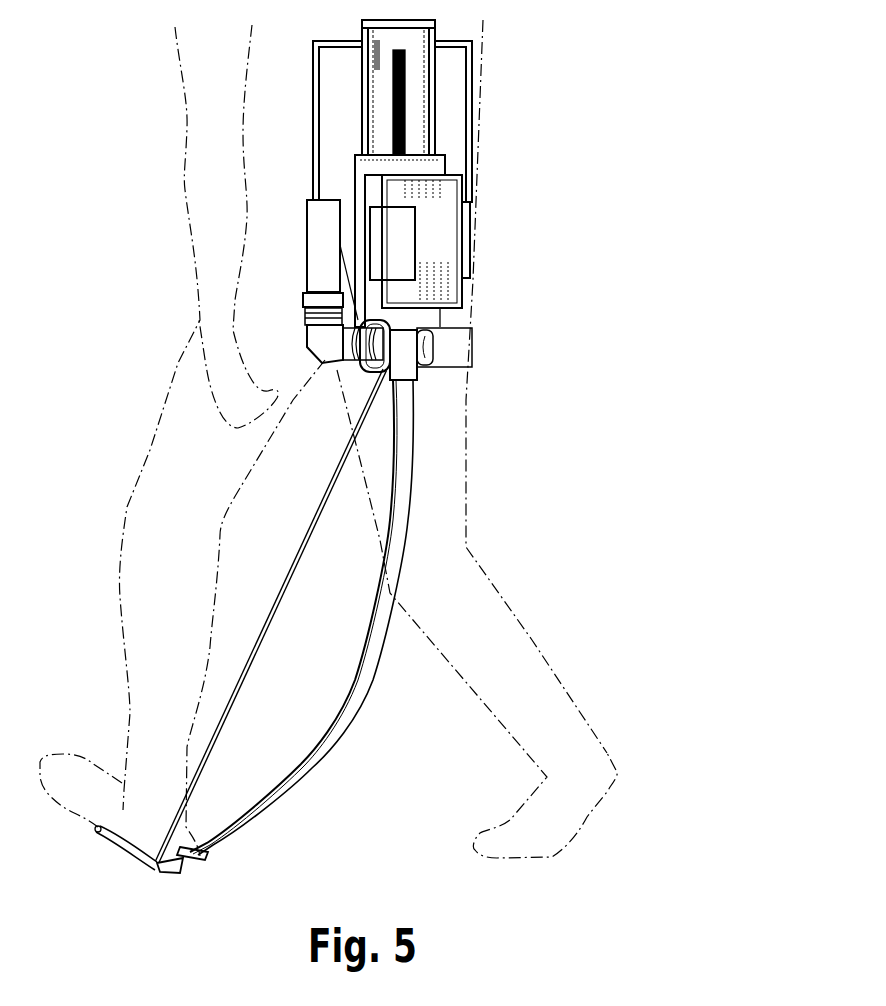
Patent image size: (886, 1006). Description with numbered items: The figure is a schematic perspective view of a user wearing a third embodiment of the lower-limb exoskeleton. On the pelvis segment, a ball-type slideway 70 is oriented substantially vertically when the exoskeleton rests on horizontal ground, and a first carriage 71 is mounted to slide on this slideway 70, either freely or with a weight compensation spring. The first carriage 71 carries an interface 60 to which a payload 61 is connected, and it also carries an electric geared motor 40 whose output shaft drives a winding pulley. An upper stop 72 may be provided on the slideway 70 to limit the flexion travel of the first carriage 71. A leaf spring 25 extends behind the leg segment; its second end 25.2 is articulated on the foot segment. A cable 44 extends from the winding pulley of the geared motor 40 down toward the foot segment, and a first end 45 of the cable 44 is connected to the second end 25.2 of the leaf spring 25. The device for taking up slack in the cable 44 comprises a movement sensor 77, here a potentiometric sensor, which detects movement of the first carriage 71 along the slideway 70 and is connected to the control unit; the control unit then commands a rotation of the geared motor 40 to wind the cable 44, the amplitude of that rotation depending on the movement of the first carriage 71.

The upper stop 72 is at (410, 55).
The ball-type slideway 70 is at (410, 100).
The movement sensor 77 is at (393, 104).
The first carriage 71 is at (430, 165).
The payload 61 is at (452, 188).
The interface 60 is at (398, 250).
The electric geared motor 40 is at (320, 263).
The cable 44 is at (287, 577).
The leaf spring 25 is at (302, 762).
The first end of the cable 45 is at (205, 848).
The second end of the leaf spring 25.2 is at (193, 862).